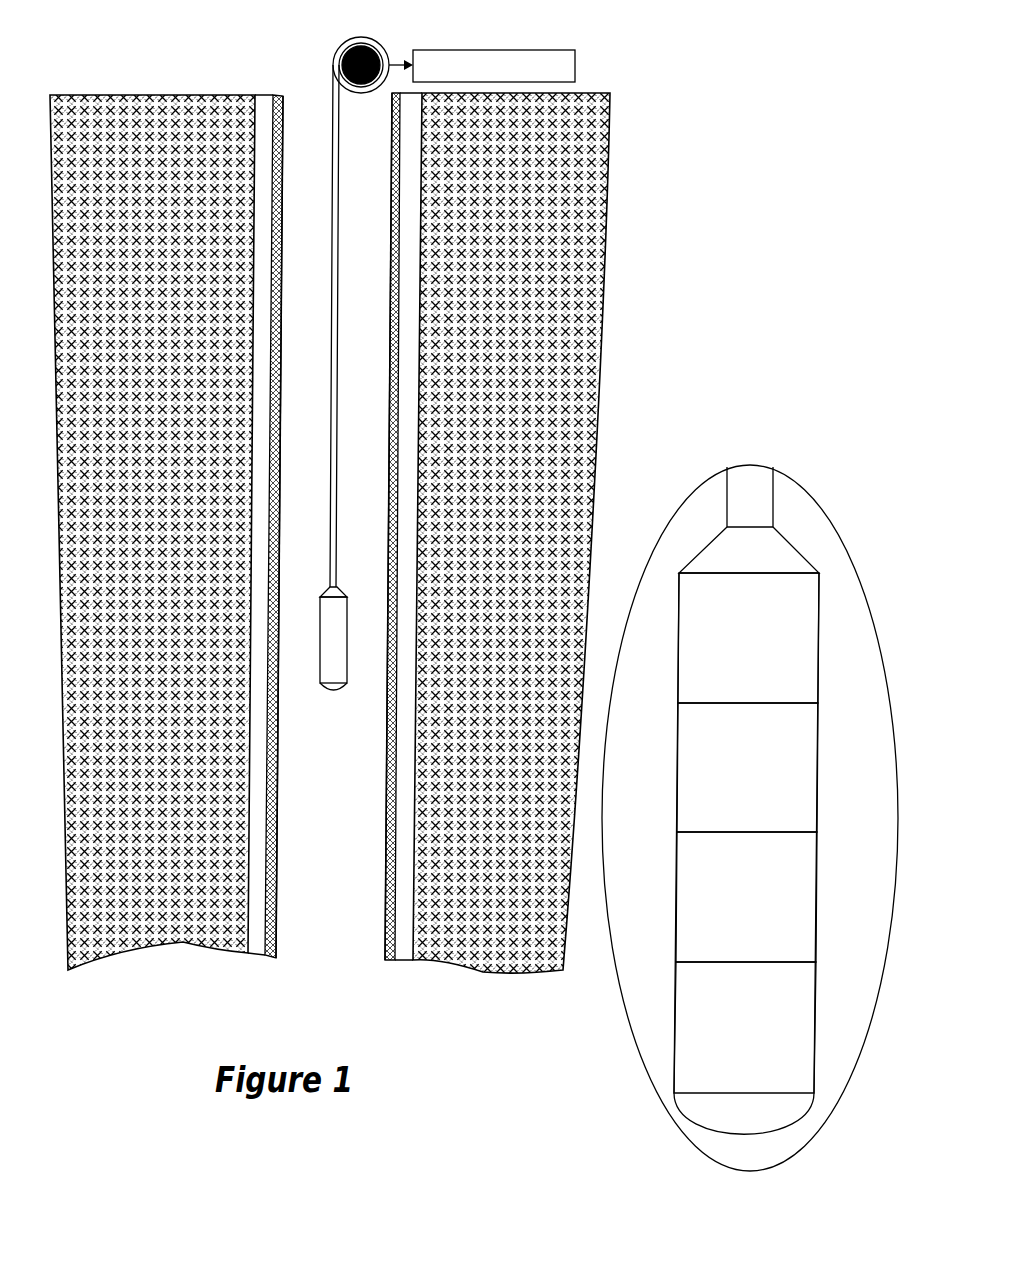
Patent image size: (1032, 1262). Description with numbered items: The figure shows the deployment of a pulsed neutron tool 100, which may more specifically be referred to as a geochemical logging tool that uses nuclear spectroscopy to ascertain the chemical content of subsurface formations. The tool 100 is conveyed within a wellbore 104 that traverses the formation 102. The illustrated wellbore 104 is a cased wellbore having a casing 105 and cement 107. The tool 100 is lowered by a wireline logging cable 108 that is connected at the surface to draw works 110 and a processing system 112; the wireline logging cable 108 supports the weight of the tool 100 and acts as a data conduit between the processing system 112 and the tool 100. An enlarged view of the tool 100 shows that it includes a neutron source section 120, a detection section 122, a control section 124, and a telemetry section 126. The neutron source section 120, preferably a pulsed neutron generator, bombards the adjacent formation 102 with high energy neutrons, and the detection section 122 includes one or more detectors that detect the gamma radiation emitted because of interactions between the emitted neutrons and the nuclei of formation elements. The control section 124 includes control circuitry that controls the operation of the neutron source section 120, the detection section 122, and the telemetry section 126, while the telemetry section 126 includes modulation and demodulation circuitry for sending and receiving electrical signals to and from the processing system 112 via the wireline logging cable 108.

The PN tool 100 is at (357, 662).
The formation 102 is at (230, 155).
The wellbore 104 is at (322, 90).
The casing 105 is at (385, 962).
The cement 107 is at (258, 955).
The wireline logging cable 108 is at (333, 350).
The draw works 110 is at (367, 47).
The processing system 112 is at (557, 50).
The neutron source section 120 is at (745, 1027).
The detection section 122 is at (746, 897).
The control section 124 is at (747, 767).
The telemetry section 126 is at (748, 638).